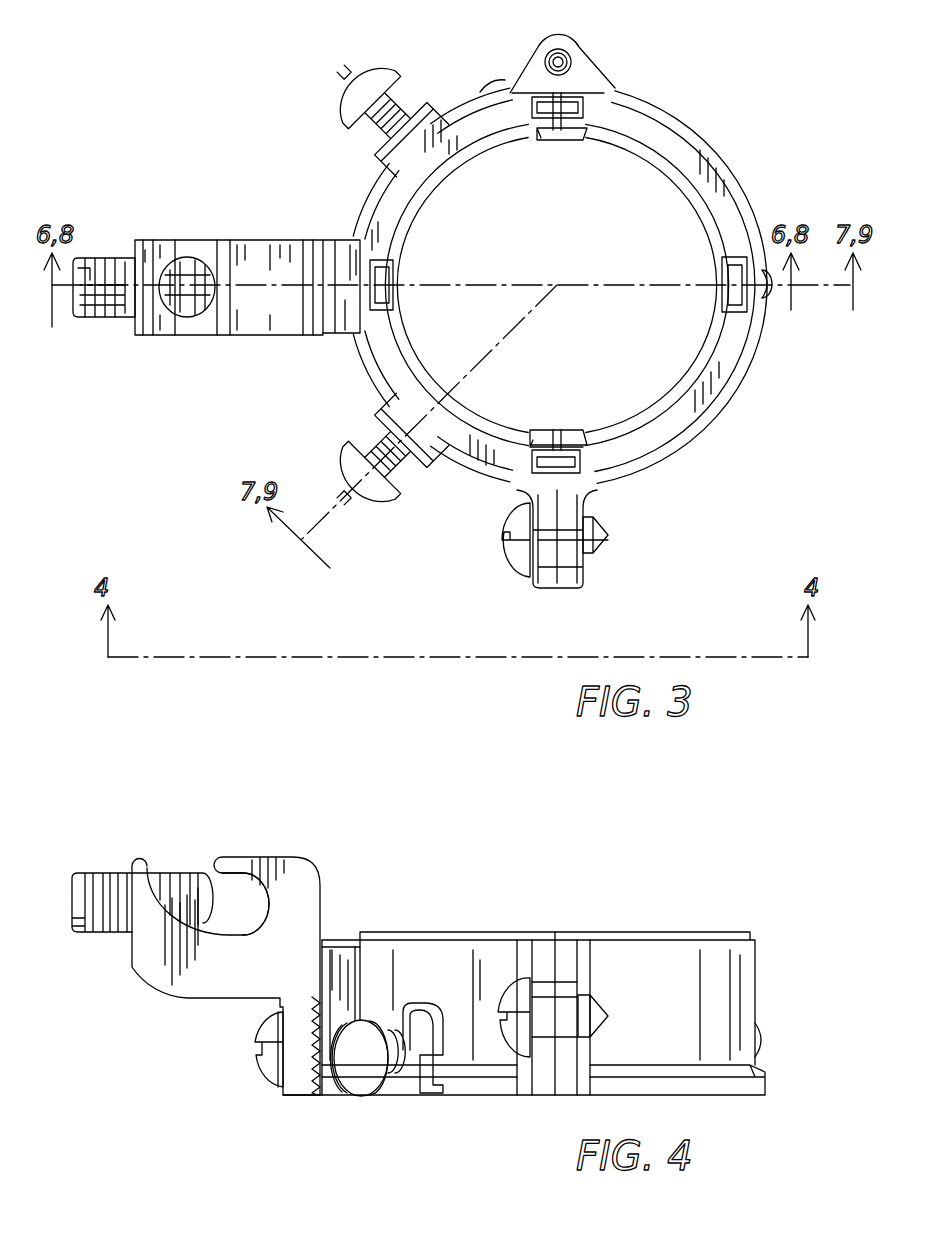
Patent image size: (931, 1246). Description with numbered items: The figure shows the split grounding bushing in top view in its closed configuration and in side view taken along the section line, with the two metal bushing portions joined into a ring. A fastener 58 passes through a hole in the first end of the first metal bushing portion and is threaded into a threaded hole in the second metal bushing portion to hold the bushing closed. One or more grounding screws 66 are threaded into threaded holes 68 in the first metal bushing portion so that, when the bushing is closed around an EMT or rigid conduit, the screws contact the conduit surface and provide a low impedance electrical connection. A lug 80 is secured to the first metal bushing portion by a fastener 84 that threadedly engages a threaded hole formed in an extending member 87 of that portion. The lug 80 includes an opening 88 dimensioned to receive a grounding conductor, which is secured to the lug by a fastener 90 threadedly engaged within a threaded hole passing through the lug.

In FIG. 3, the fastener 58 is at (523, 562).
In FIG. 3, the grounding screw 66 is at (381, 68).
In FIG. 4, the grounding screw 66 is at (372, 1072).
In FIG. 4, the threaded hole 68 is at (403, 1072).
In FIG. 3, the lug 80 is at (258, 332).
In FIG. 4, the lug 80 is at (307, 888).
In FIG. 4, the fastener 84 is at (265, 1068).
In FIG. 4, the extending member 87 is at (335, 942).
In FIG. 4, the opening 88 is at (190, 862).
In FIG. 3, the fastener 90 is at (110, 258).
In FIG. 4, the fastener 90 is at (110, 873).